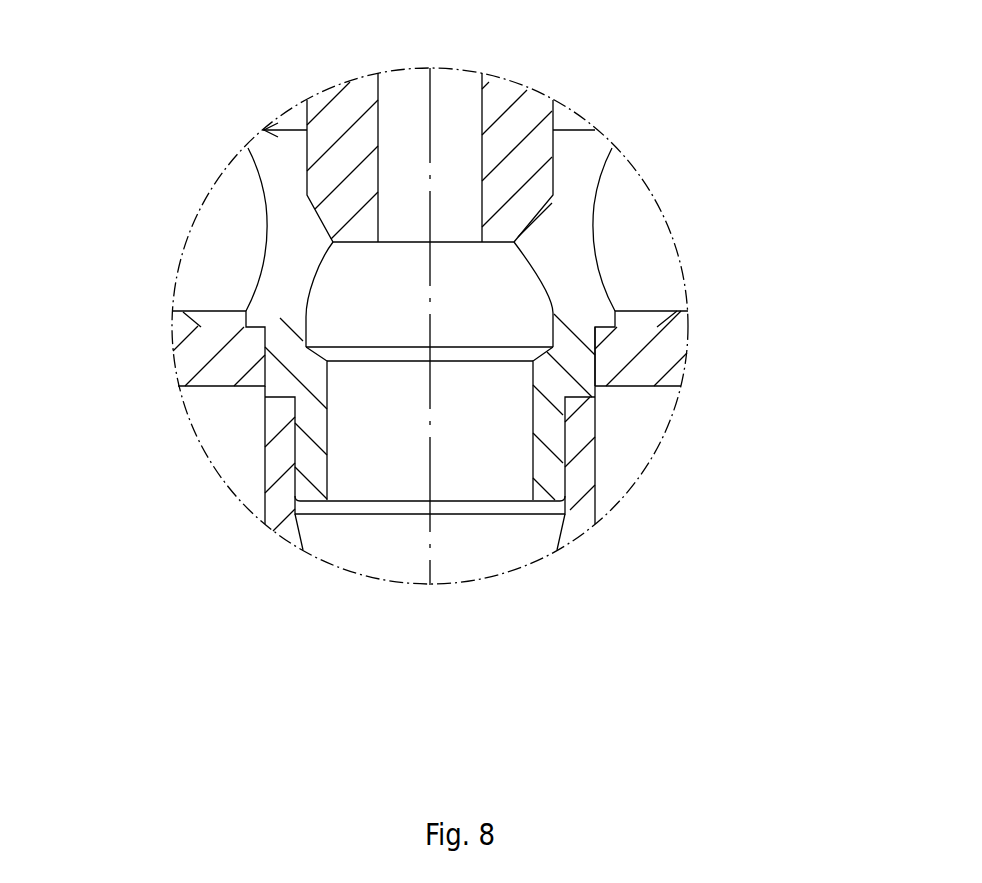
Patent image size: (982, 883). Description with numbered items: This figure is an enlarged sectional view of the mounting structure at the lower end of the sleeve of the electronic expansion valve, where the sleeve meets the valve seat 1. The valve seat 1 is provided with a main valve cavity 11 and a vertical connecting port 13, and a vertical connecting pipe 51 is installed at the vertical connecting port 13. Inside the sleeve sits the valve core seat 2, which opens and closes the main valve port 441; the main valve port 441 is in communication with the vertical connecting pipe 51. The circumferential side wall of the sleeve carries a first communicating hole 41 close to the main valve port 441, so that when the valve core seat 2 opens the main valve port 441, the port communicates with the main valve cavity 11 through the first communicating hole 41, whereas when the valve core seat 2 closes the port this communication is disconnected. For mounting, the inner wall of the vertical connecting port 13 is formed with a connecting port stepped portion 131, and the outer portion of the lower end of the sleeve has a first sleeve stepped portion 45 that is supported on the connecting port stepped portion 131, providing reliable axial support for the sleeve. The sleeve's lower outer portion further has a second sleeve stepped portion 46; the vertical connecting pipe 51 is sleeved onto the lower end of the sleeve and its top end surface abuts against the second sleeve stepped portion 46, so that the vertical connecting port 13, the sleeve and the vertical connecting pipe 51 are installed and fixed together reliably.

The valve seat 1 is at (185, 339).
The main valve cavity 11 is at (255, 214).
The vertical connecting port 13 is at (265, 333).
The connecting port stepped portion 131 is at (200, 335).
The valve core seat 2 is at (343, 174).
The main valve port 441 is at (360, 358).
The first communicating hole 41 is at (588, 285).
The first sleeve stepped portion 45 is at (619, 323).
The second sleeve stepped portion 46 is at (597, 387).
The vertical connecting pipe 51 is at (572, 472).